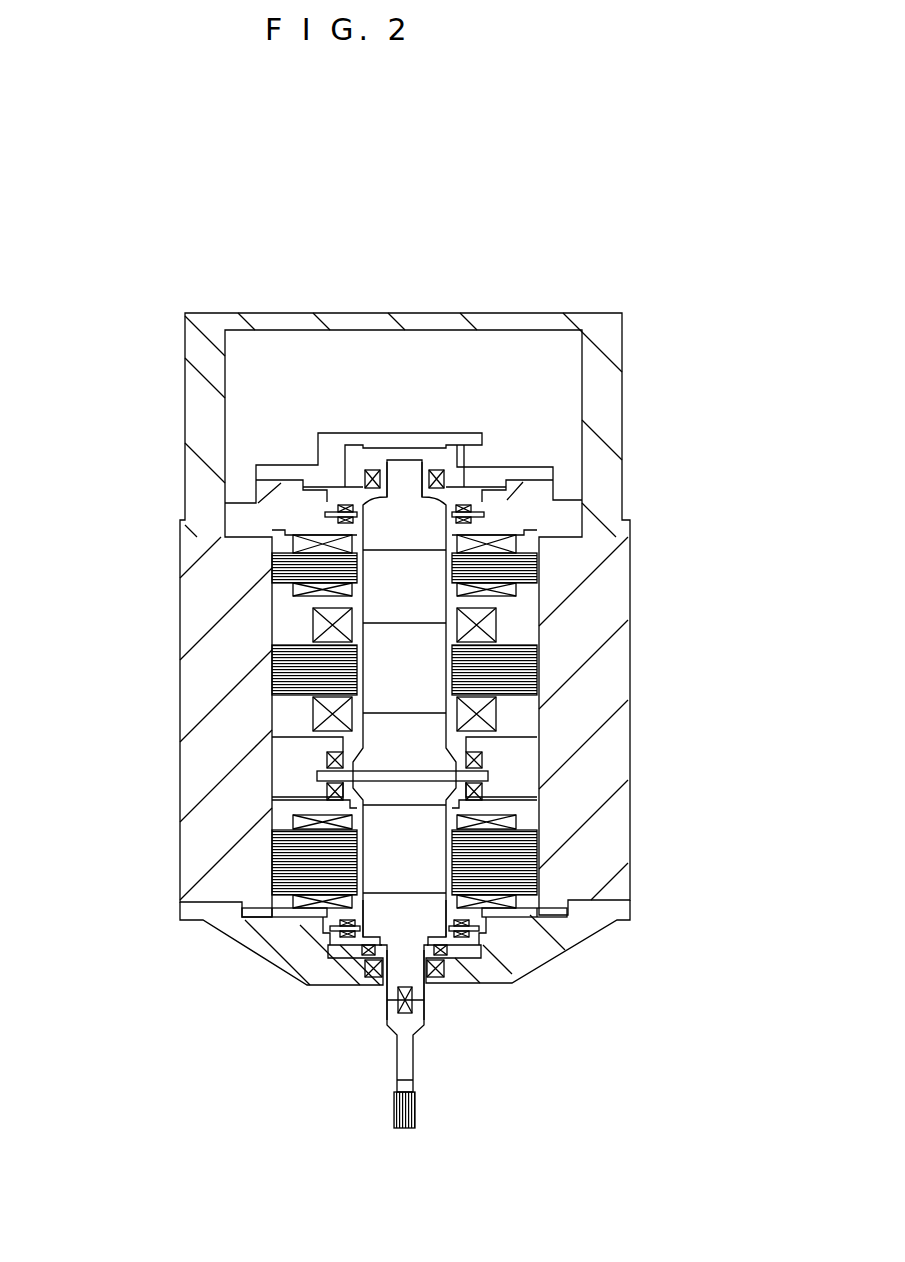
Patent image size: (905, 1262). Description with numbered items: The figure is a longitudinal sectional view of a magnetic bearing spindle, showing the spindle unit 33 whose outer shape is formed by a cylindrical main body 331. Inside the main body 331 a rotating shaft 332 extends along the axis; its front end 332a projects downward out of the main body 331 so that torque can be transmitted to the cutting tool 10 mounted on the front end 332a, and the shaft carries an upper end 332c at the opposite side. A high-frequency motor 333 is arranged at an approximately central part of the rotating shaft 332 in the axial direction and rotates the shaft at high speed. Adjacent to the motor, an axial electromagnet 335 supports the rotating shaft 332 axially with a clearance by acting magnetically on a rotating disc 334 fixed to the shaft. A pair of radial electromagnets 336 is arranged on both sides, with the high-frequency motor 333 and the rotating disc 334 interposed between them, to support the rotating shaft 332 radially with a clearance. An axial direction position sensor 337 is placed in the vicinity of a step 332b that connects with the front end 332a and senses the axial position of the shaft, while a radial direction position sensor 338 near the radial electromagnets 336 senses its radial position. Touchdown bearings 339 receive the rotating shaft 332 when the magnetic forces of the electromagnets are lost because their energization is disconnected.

The spindle unit 33 is at (555, 294).
The main body 331 is at (608, 598).
The rotating shaft 332 is at (427, 703).
The front end 332a is at (405, 975).
The step 332b is at (413, 915).
The rotor upper shaft end 332c is at (402, 480).
The high-frequency motor 333 is at (287, 670).
The rotating disc 334 is at (388, 776).
The axial electromagnet 335 is at (480, 758).
The radial electromagnets 336 is at (290, 563).
The axial direction position sensor 337 is at (440, 951).
The radial direction position sensor 338 is at (333, 513).
The touchdown bearing 339 is at (364, 480).
The cutting tool 10 is at (410, 1067).